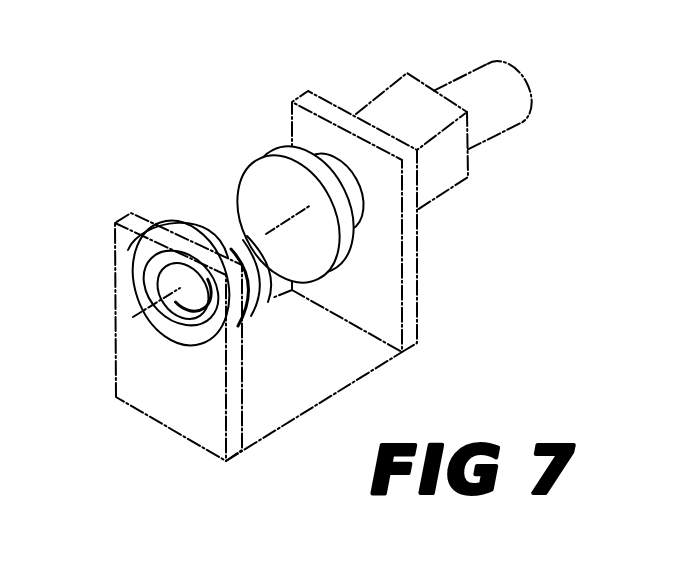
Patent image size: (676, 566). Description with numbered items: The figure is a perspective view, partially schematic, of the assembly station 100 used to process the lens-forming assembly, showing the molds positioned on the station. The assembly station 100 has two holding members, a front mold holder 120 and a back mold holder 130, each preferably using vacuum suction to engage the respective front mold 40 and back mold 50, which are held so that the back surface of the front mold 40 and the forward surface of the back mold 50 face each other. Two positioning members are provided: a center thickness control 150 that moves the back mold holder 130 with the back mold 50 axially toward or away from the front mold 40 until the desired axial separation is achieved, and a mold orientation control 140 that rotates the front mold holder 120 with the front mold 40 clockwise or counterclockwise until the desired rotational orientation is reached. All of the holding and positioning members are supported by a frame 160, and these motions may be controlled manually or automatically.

The front mold 40 is at (178, 221).
The back mold 50 is at (286, 155).
The assembly station 100 is at (290, 117).
The front mold holder 120 is at (268, 302).
The back mold holder 130 is at (258, 202).
The mold orientation control 140 is at (162, 279).
The center thickness control 150 is at (497, 60).
The frame 160 is at (280, 432).